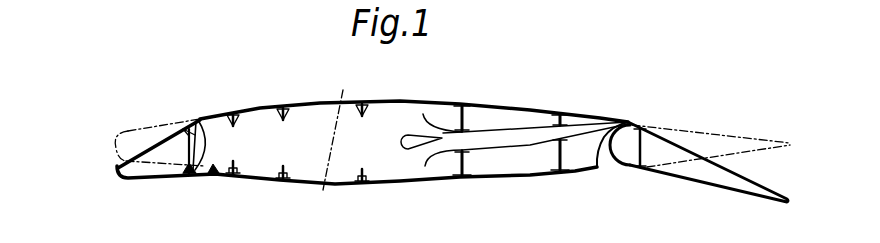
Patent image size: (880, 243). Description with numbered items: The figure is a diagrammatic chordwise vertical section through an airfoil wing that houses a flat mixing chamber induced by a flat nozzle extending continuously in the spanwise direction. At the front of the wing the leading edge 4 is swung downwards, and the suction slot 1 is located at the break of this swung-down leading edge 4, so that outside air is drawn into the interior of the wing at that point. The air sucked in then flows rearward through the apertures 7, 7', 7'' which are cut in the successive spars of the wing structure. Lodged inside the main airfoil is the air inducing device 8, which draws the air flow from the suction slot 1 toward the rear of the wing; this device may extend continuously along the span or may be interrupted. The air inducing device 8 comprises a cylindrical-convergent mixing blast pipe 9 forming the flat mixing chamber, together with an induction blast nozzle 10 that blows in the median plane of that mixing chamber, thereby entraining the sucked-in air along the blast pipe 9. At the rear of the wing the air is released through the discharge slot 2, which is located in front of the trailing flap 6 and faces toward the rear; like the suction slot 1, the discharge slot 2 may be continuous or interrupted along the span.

The suction slot 1 is at (200, 80).
The discharge slot 2 is at (666, 107).
The leading edge 4 is at (163, 145).
The trailing flap 6 is at (691, 172).
The aperture 7 is at (234, 144).
The aperture 7' is at (284, 143).
The aperture 7'' is at (366, 143).
The air inducing device 8 is at (416, 102).
The cylindrical-convergent mixing blast pipe 9 is at (500, 146).
The induction blast nozzle 10 is at (415, 148).